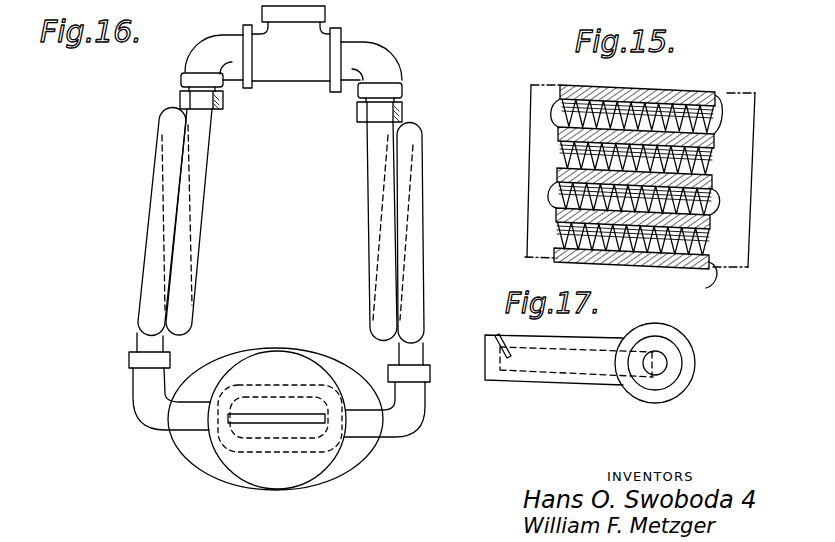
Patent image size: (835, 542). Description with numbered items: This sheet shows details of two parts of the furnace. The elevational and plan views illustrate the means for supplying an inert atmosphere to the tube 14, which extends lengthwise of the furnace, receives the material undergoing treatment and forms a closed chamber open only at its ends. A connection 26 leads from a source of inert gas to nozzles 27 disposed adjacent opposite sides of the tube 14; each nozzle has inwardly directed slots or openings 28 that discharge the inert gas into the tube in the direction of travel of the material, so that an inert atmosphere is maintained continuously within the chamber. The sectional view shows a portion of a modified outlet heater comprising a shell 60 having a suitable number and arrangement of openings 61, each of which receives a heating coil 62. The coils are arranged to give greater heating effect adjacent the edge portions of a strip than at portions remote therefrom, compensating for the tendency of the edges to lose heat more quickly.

In FIG. 16, the tube 14 is at (285, 460).
In FIG. 16, the connection 26 is at (193, 213).
In FIG. 16, the nozzles 27 is at (162, 413).
In FIG. 17, the nozzles 27 is at (582, 378).
In FIG. 17, the slots or openings 28 is at (503, 338).
In FIG. 15, the shell 60 is at (619, 175).
In FIG. 15, the openings 61 is at (560, 108).
In FIG. 15, the heating coil 62 is at (558, 187).